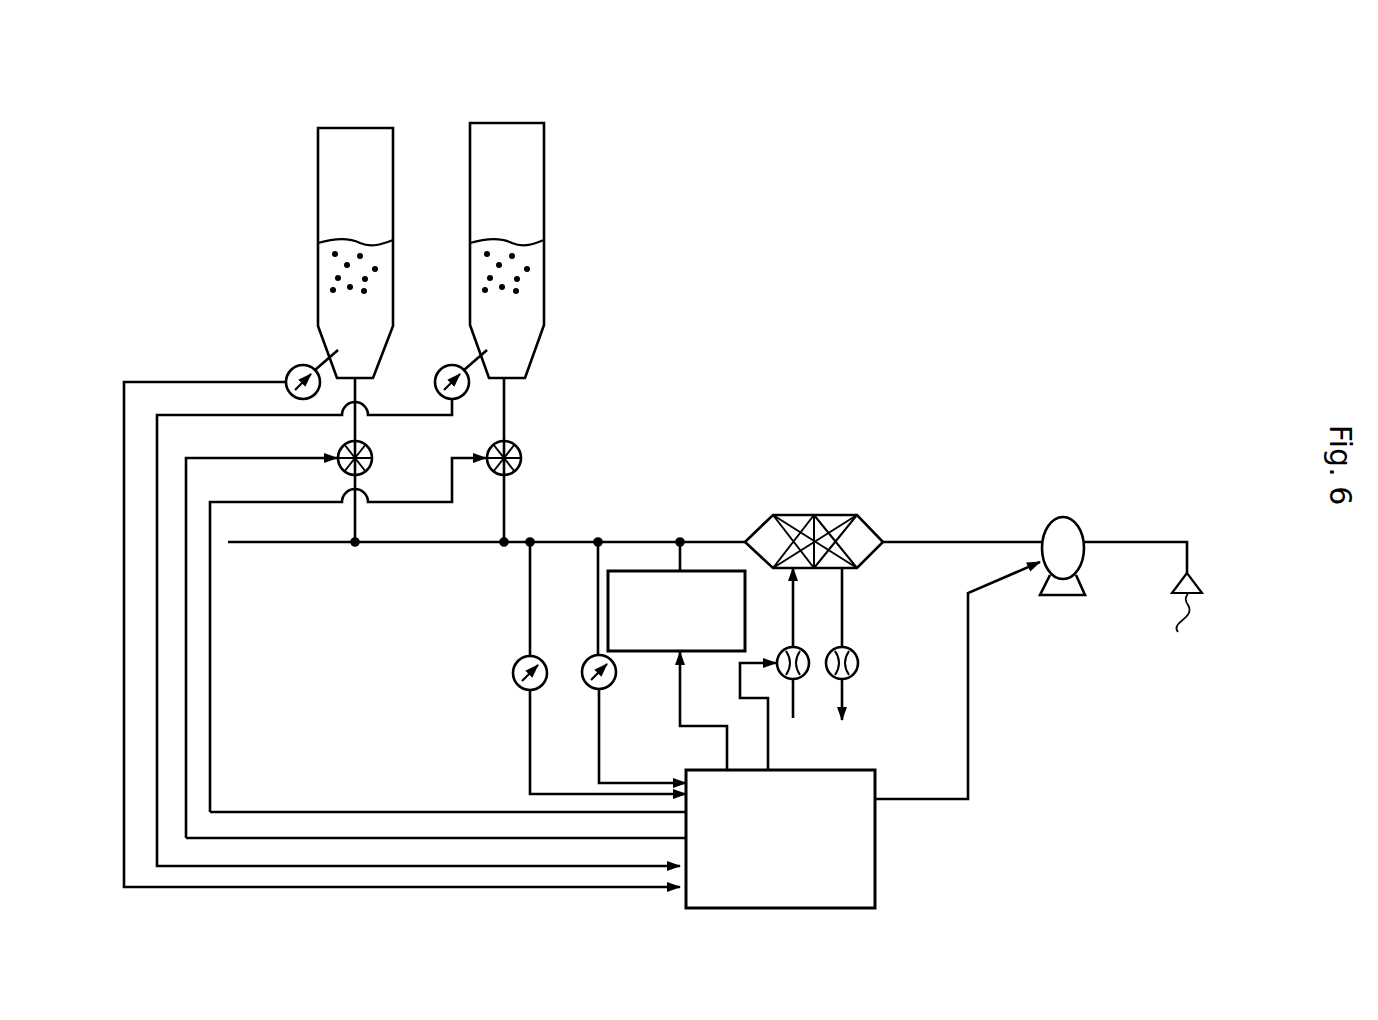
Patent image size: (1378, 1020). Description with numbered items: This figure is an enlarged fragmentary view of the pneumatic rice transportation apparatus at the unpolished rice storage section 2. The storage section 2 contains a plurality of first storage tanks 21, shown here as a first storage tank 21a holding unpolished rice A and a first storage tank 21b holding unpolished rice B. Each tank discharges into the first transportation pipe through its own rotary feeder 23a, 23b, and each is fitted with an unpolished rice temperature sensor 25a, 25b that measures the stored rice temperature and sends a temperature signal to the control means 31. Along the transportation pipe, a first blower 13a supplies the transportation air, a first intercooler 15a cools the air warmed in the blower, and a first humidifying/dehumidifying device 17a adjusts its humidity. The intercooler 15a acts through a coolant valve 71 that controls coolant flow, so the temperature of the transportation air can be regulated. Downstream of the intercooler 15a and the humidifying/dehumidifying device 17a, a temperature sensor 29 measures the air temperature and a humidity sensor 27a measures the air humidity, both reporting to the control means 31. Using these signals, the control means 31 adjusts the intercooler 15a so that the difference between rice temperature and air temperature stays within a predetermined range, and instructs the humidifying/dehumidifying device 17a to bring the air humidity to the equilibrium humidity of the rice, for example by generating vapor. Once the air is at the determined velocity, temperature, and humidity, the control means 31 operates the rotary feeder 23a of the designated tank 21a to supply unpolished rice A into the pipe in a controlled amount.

The unpolished rice storage section 2 is at (772, 150).
The first storage tanks 21 is at (553, 66).
The first storage tank 21a is at (358, 126).
The first storage tank 21b is at (505, 122).
The rotary feeder 23a is at (368, 442).
The rotary feeder 23b is at (522, 448).
The unpolished rice temperature sensor 25a is at (301, 365).
The unpolished rice temperature sensor 25b is at (467, 392).
The first humidifying/dehumidifying device 17a is at (655, 571).
The first intercooler 15a is at (795, 515).
The first blower 13a is at (1063, 517).
The temperature sensor 29 is at (516, 673).
The humidity sensor 27a is at (588, 684).
The coolant valve 71 is at (808, 700).
The control means 31 is at (876, 866).